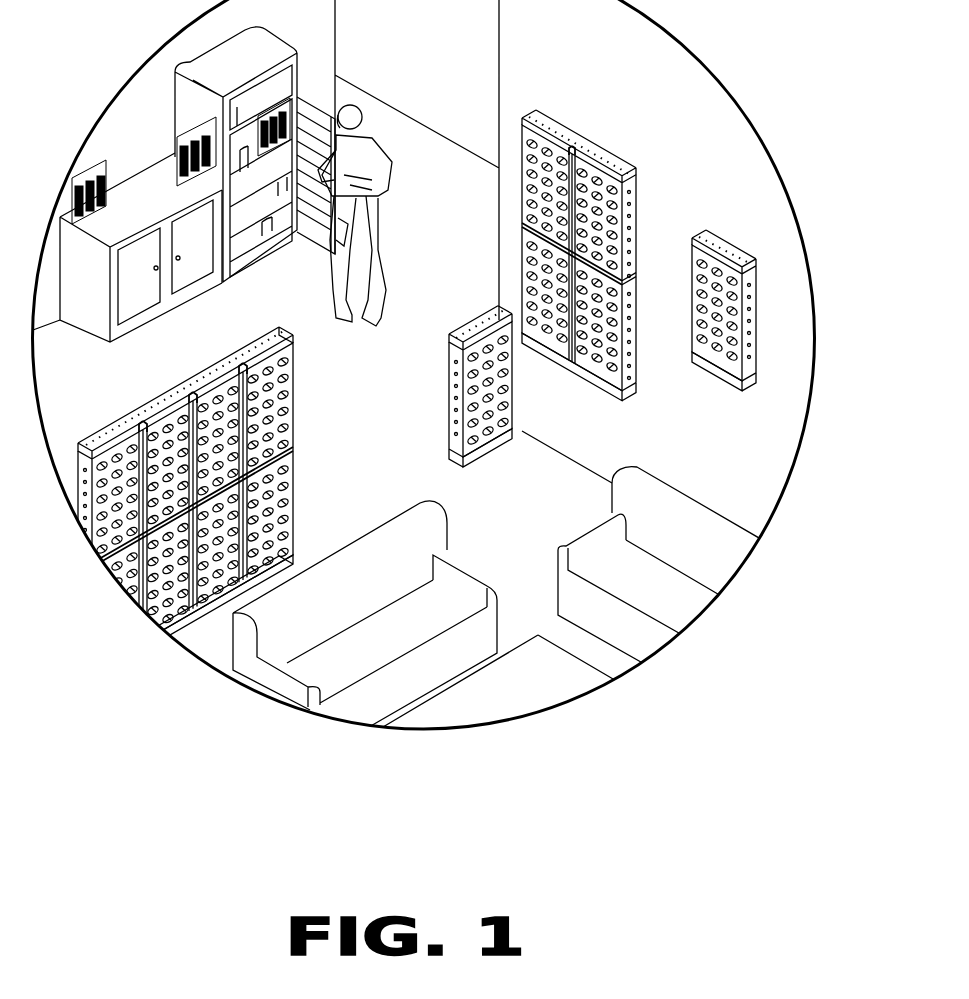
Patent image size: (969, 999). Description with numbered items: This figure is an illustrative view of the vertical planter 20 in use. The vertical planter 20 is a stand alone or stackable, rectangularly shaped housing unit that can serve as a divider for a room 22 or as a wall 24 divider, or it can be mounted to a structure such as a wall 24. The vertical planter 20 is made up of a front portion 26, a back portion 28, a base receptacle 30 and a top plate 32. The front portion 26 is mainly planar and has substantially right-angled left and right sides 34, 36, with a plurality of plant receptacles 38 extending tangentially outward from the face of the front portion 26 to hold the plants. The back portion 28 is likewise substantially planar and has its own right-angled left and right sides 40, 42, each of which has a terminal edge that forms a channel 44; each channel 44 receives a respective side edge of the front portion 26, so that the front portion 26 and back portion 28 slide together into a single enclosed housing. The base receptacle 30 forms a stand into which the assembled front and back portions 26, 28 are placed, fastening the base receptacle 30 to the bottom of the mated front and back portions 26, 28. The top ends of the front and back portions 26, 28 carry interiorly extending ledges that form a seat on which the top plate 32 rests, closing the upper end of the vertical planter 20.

The vertical planter 20 is at (738, 237).
The room 22 is at (75, 422).
The wall 24 is at (682, 62).
The front portion 26 is at (522, 187).
The back portion 28 is at (192, 368).
The base receptacle 30 is at (498, 442).
The top plate 32 is at (602, 158).
The left side 34 is at (78, 526).
The right side 36 is at (740, 380).
The plant receptacles 38 is at (528, 280).
The left side 40 is at (447, 385).
The right side 42 is at (637, 332).
The channel 44 is at (642, 199).